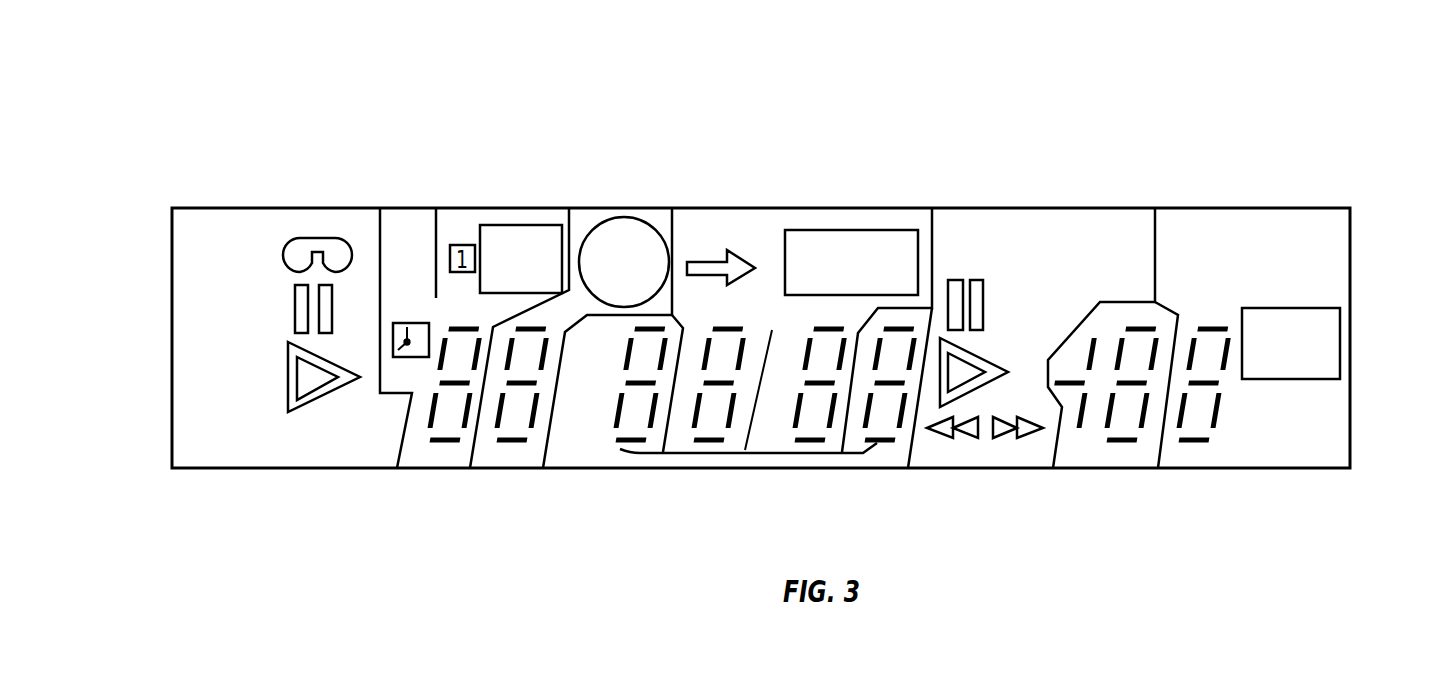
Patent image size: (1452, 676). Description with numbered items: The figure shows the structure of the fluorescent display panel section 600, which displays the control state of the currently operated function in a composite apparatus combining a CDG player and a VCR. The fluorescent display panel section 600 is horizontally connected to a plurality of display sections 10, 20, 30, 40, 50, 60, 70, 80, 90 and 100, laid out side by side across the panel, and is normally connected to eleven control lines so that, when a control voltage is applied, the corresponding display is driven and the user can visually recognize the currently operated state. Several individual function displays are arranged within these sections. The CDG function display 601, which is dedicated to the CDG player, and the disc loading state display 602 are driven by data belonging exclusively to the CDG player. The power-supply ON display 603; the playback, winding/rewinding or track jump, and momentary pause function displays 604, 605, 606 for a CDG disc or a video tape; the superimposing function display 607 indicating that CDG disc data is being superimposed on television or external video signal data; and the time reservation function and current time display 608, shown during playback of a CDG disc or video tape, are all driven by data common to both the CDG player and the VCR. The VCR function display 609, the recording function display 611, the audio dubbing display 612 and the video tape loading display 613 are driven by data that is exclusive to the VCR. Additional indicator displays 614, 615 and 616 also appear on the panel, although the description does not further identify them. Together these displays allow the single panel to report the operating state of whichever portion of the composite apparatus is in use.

The fluorescent display panel section 600 is at (705, 73).
The display section 10 is at (270, 455).
The display section 20 is at (442, 458).
The display section 30 is at (510, 457).
The display section 40 is at (573, 457).
The time reservation function and current time display 608 is at (690, 433).
The display section 50 is at (730, 458).
The display section 60 is at (800, 458).
The display section 70 is at (868, 458).
The playback, winding/rewinding and momentary pause function display 604 is at (965, 438).
The playback, winding/rewinding and momentary pause function display 605 is at (1032, 437).
The playback, winding/rewinding and momentary pause function display 606 is at (977, 390).
The display section 80 is at (1022, 460).
The display section 90 is at (1122, 447).
The display section 100 is at (1277, 447).
The power-supply ON display 603 is at (210, 233).
The video tape loading display 613 is at (317, 237).
The disc loading state display 602 is at (395, 238).
The audio dubbing display 612 is at (518, 223).
The CDG function display 601 is at (622, 217).
The direction arrow indicator 614 is at (707, 260).
The VCR function display 609 is at (835, 230).
The recording function display 611 is at (963, 235).
The SP/LP/EP tape speed indicator 615 is at (1085, 238).
The CATV index indicator 616 is at (1205, 235).
The superimposing function display 607 is at (1352, 330).